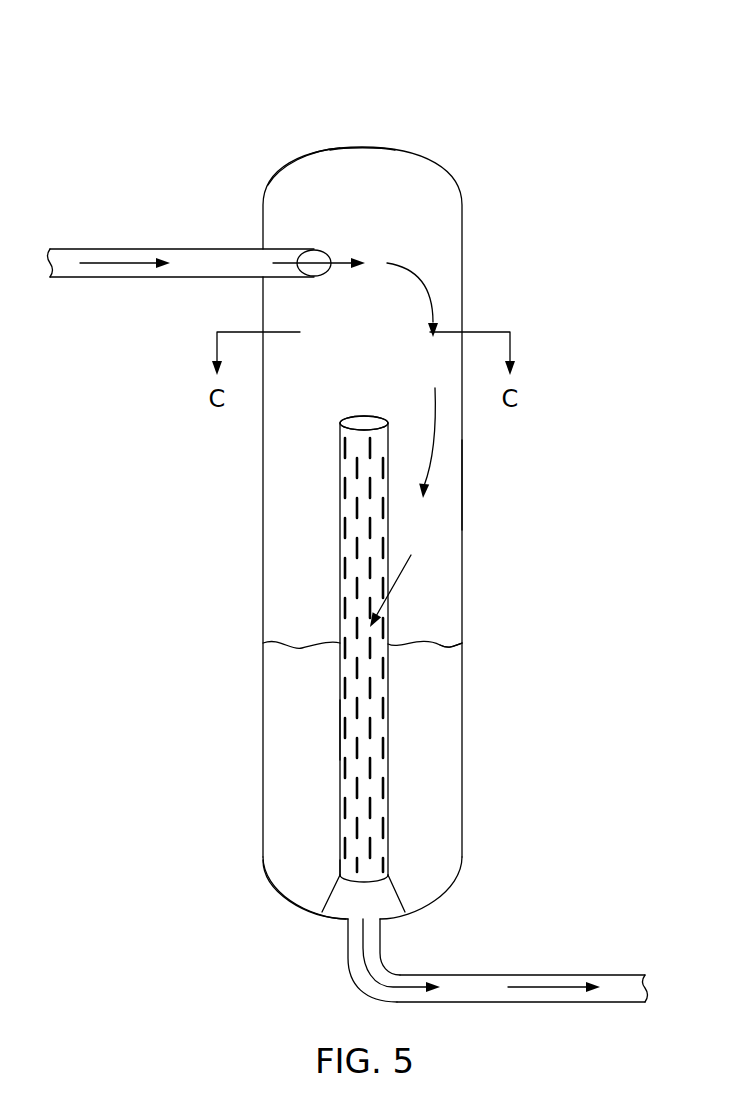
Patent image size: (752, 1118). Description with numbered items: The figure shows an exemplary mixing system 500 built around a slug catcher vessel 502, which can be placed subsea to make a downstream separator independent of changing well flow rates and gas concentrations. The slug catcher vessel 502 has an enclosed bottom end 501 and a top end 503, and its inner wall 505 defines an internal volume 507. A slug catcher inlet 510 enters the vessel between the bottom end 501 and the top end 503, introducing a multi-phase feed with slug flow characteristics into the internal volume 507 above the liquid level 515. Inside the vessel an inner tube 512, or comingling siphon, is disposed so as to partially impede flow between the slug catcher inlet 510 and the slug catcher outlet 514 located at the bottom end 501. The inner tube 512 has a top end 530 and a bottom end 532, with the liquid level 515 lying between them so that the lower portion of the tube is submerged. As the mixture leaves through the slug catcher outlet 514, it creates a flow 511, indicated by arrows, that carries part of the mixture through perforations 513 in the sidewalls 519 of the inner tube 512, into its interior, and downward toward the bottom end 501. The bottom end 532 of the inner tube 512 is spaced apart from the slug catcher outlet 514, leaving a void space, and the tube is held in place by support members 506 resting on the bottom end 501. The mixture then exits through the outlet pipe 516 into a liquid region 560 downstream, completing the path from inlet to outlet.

The mixing system 500 is at (140, 58).
The bottom end 501 is at (290, 898).
The slug catcher vessel 502 is at (440, 167).
The top end 503 is at (362, 146).
The inner wall 505 is at (463, 483).
The support members 506 is at (398, 893).
The internal volume 507 is at (318, 183).
The slug catcher inlet 510 is at (80, 248).
The flow 511 is at (415, 277).
The inner tube 512 is at (340, 560).
The perforations 513 is at (357, 510).
The slug catcher outlet 514 is at (357, 923).
The liquid level 515 is at (303, 648).
The outlet pipe 516 is at (610, 973).
The sidewalls 519 is at (326, 731).
The top end of inner tube 530 is at (325, 427).
The bottom end of inner tube 532 is at (327, 866).
The liquid region 560 is at (472, 651).